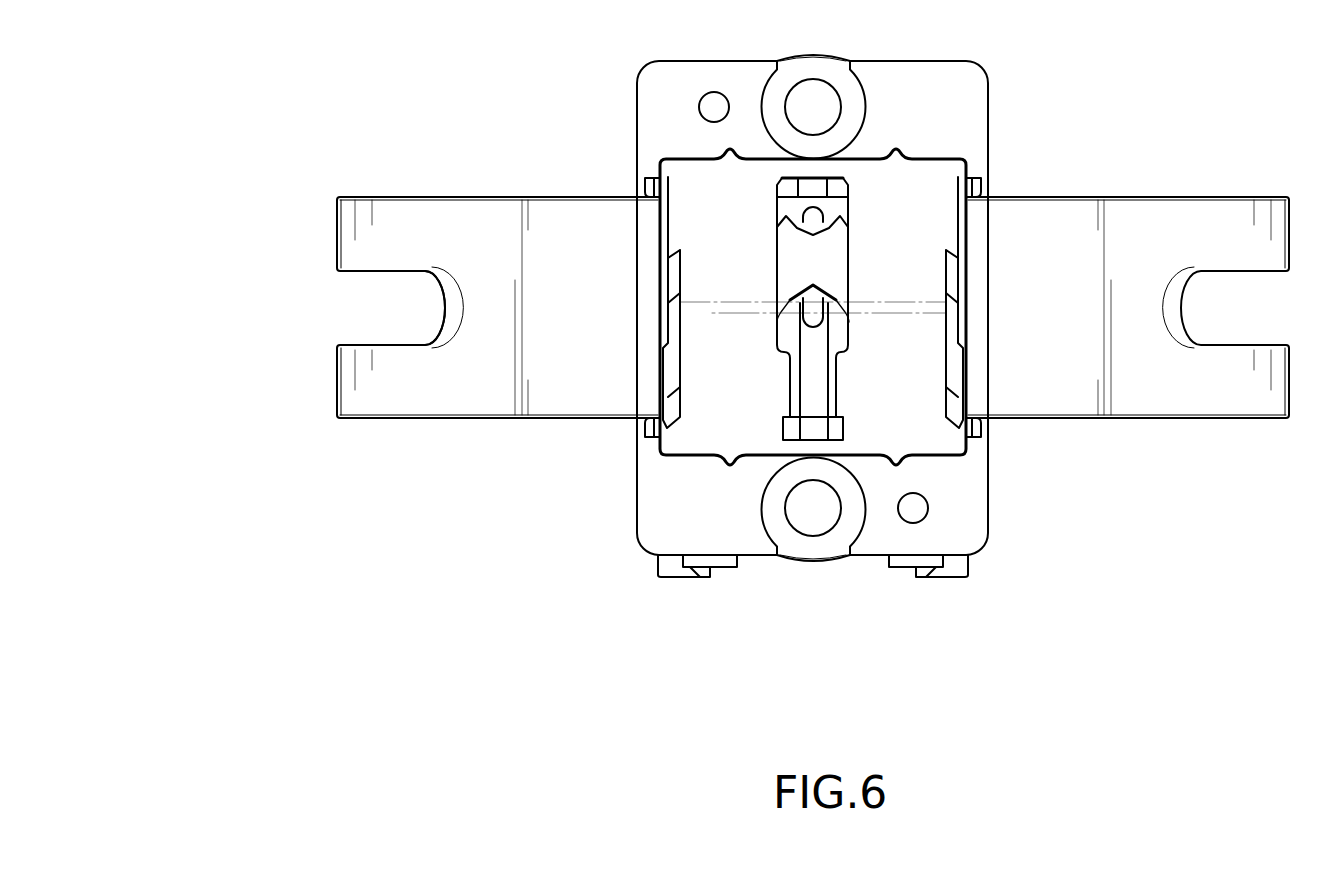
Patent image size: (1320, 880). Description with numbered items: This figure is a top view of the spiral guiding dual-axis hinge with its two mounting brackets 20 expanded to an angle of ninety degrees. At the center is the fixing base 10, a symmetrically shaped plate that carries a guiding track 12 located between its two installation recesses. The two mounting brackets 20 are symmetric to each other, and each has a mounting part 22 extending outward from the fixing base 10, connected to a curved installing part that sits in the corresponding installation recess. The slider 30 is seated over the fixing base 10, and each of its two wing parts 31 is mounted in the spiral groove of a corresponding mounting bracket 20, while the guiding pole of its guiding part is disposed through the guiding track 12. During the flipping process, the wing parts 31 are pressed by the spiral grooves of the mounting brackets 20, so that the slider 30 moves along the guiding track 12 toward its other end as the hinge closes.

The fixing base 10 is at (625, 70).
The guiding track 12 is at (813, 310).
The mounting bracket 20 is at (290, 255).
The mounting part 22 is at (482, 398).
The slider 30 is at (838, 250).
The wing part 31 is at (958, 378).